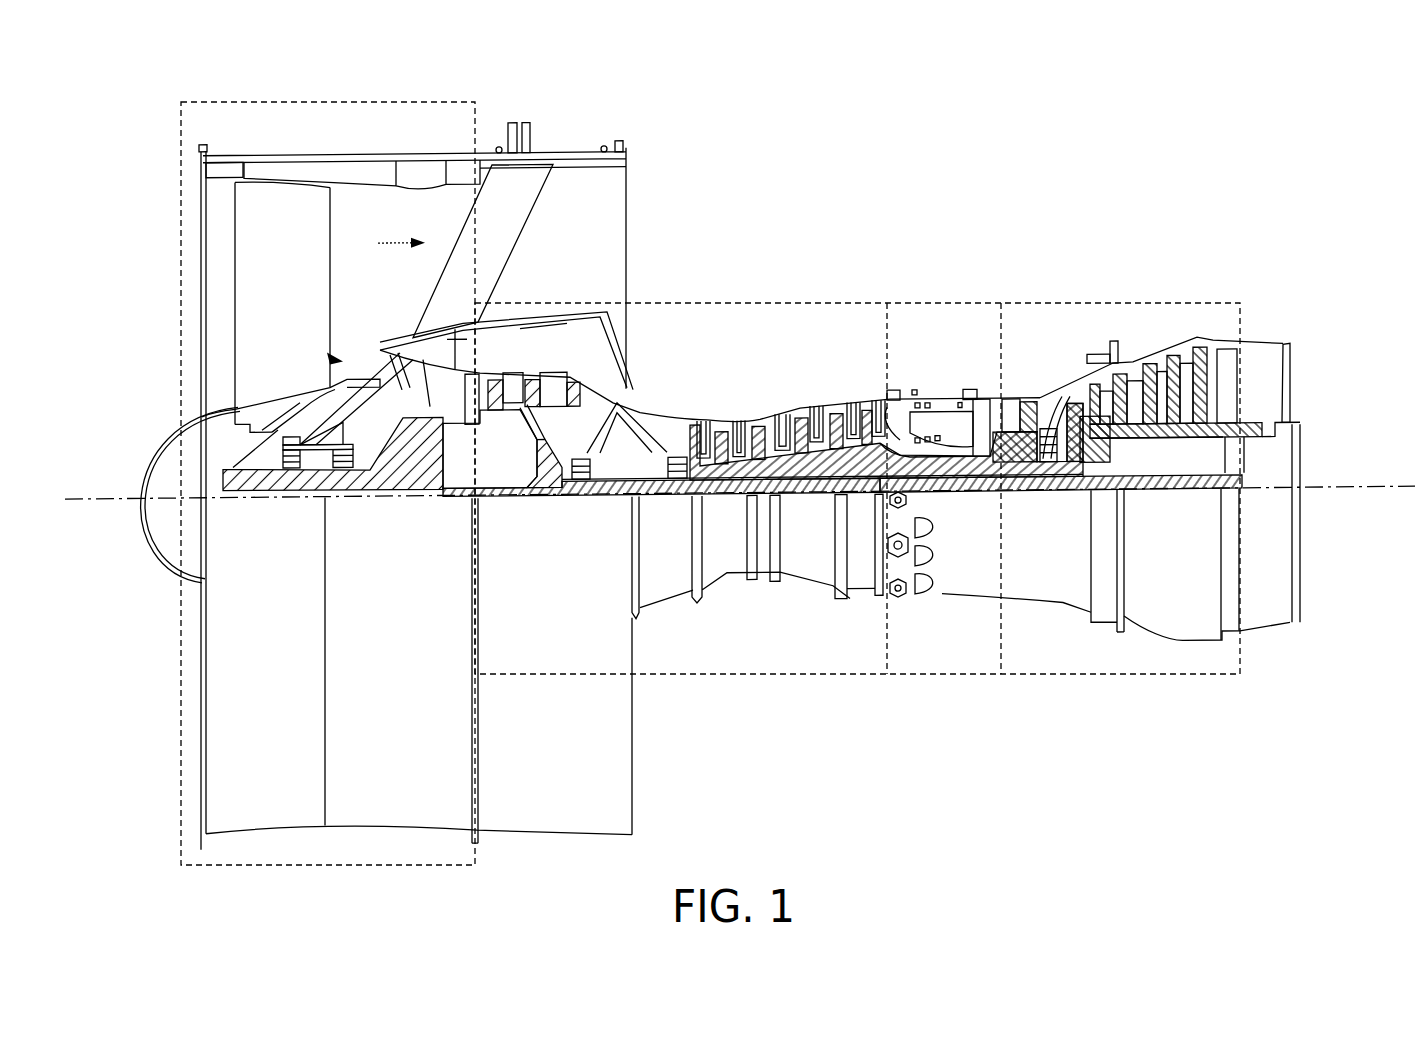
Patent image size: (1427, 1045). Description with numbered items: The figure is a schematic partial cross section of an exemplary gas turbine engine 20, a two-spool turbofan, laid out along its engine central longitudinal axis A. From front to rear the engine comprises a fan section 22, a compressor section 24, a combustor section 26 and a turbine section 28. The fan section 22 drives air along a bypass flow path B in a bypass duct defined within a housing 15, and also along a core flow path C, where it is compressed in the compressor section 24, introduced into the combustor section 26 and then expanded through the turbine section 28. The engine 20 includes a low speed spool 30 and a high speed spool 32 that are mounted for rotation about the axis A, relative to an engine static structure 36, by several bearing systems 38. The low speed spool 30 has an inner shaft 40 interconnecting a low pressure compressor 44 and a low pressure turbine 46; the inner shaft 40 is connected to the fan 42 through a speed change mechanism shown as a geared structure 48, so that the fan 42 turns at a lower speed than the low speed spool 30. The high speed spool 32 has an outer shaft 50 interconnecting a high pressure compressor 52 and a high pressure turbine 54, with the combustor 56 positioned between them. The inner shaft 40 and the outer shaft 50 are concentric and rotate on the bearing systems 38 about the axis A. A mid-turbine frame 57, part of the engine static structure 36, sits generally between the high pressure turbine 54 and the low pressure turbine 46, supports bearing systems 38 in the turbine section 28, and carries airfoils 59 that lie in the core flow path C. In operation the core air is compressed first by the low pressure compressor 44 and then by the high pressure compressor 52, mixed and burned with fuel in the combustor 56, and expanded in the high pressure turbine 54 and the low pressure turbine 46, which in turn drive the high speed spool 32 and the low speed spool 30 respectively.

The housing 15 is at (417, 162).
The gas turbine engine 20 is at (1312, 84).
The fan section 22 is at (258, 100).
The compressor section 24 is at (727, 303).
The combustor section 26 is at (938, 302).
The turbine section 28 is at (1177, 675).
The low speed spool 30 is at (807, 505).
The high speed spool 32 is at (852, 455).
The engine static structure 36 is at (865, 606).
The bearing systems 38 is at (583, 478).
The inner shaft 40 is at (656, 478).
The fan 42 is at (280, 287).
The low pressure compressor 44 is at (540, 380).
The low pressure turbine 46 is at (1163, 357).
The geared structure 48 is at (422, 470).
The outer shaft 50 is at (957, 490).
The high pressure compressor 52 is at (783, 417).
The high pressure turbine 54 is at (1010, 399).
The combustor 56 is at (930, 420).
The mid-turbine frame 57 is at (1070, 372).
The airfoils 59 is at (1062, 410).
The engine central longitudinal axis A is at (1350, 483).
The bypass flow path B is at (403, 240).
The core flow path C is at (332, 358).